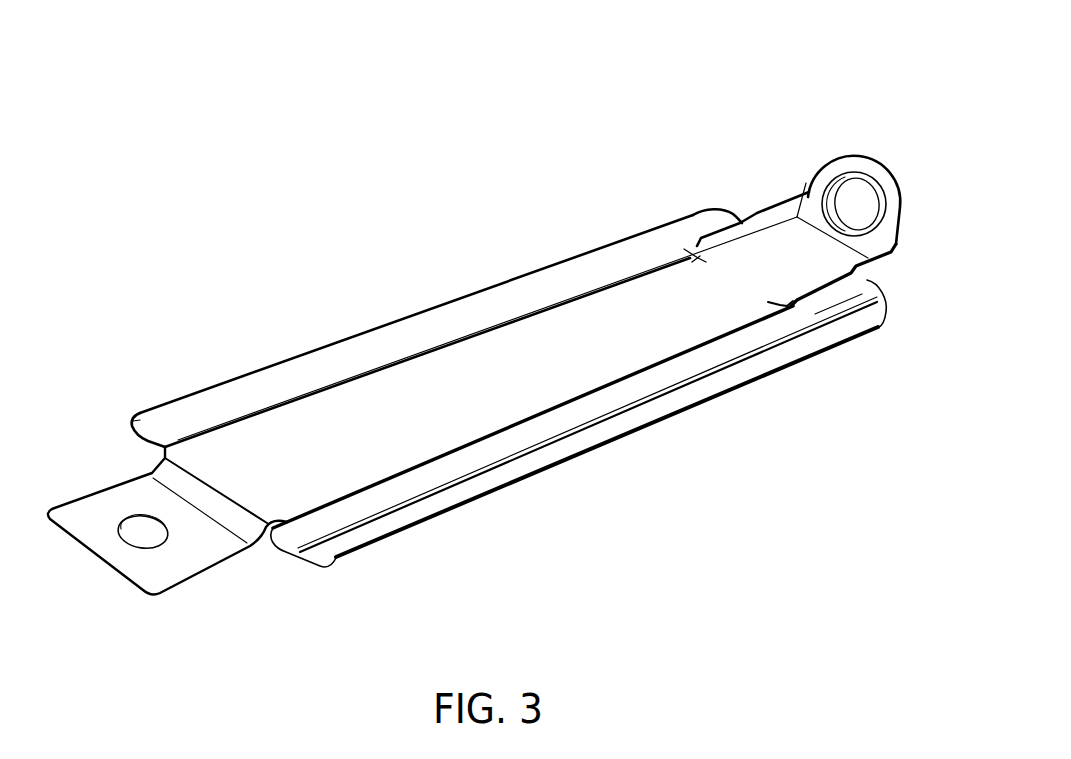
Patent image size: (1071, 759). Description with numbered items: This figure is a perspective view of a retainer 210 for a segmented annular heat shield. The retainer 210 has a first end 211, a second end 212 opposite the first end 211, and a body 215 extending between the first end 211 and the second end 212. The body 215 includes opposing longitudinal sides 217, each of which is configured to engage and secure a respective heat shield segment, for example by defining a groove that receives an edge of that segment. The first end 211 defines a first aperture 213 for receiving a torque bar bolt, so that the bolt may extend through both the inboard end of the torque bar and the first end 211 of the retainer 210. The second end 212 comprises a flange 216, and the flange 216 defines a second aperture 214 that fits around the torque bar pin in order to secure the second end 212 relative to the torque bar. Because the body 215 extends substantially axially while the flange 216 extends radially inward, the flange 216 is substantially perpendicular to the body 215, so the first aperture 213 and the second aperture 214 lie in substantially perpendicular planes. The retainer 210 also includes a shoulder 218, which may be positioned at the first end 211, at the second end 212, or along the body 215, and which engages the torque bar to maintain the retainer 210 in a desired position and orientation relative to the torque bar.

The retainer 210 is at (223, 118).
The first end 211 is at (52, 452).
The second end 212 is at (771, 132).
The first aperture 213 is at (158, 539).
The second aperture 214 is at (852, 202).
The body 215 is at (536, 382).
The flange 216 is at (848, 162).
The opposing longitudinal sides 217 is at (440, 286).
The shoulder 218 is at (752, 219).